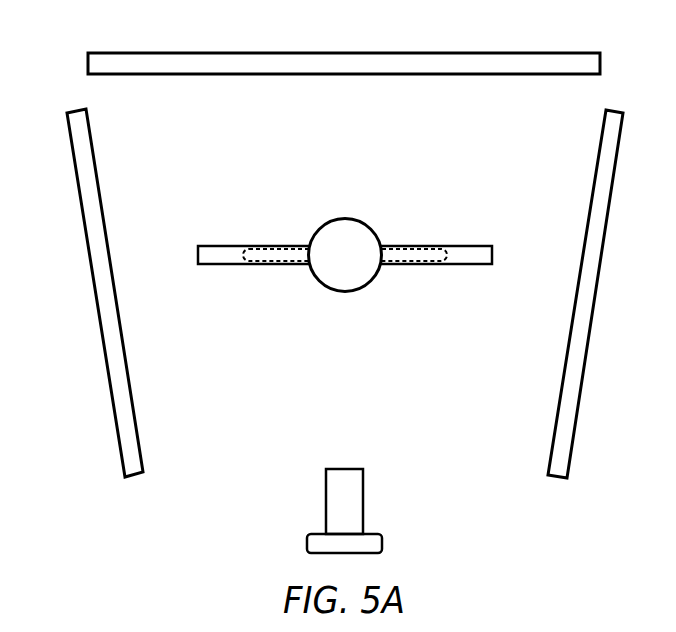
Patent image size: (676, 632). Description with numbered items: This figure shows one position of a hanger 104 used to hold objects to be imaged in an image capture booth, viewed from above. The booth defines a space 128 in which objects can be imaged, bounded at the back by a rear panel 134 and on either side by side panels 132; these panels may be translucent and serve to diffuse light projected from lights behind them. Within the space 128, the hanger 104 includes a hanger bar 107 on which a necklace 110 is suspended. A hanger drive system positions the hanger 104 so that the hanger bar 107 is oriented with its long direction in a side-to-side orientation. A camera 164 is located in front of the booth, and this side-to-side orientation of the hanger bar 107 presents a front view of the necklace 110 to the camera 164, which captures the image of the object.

The hanger 104 is at (305, 220).
The hanger bar 107 is at (460, 250).
The necklace 110 is at (428, 265).
The space 128 is at (272, 368).
The side panels 132 is at (110, 372).
The rear panel 134 is at (373, 60).
The camera 164 is at (347, 473).